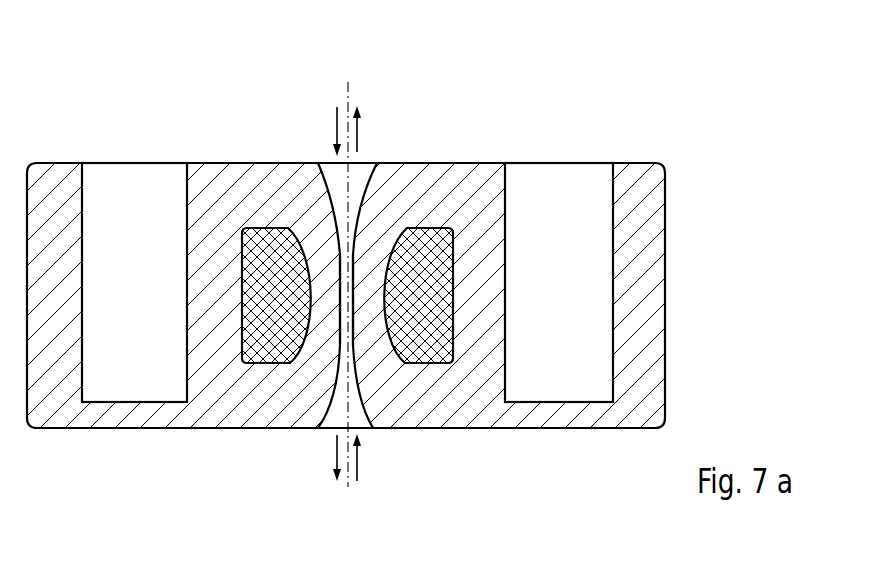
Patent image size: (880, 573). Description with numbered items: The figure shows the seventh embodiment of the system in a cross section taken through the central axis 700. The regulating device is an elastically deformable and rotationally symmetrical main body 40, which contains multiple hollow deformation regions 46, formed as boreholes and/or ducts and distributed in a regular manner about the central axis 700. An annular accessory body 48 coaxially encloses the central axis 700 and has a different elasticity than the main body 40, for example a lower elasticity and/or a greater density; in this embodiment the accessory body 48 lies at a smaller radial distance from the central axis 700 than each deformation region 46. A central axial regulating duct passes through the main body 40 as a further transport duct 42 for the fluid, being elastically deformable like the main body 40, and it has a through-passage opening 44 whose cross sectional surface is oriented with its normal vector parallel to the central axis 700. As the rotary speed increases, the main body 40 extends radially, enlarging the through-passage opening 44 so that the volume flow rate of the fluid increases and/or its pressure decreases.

The main body 40 is at (679, 279).
The transport duct 42 is at (333, 165).
The through-passage opening 44 is at (353, 299).
The deformation region 46 is at (141, 181).
The accessory body 48 is at (422, 273).
The central axis 700 is at (349, 92).